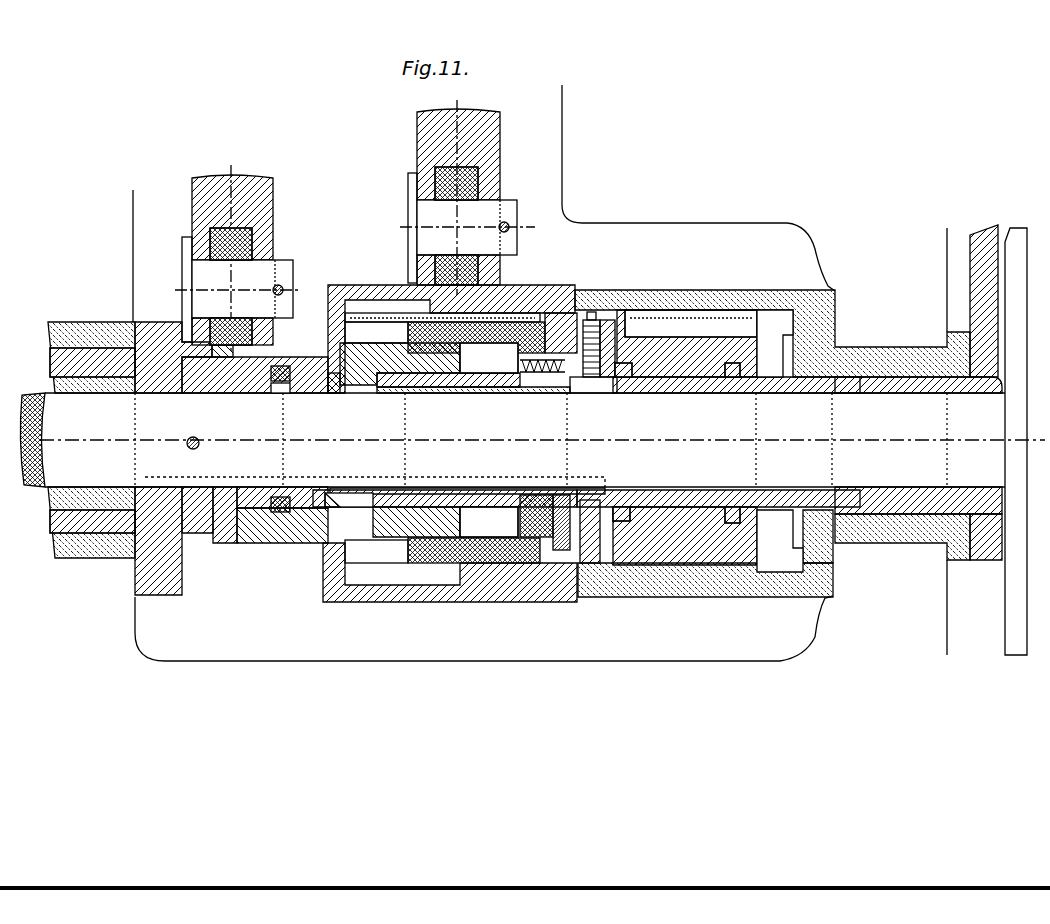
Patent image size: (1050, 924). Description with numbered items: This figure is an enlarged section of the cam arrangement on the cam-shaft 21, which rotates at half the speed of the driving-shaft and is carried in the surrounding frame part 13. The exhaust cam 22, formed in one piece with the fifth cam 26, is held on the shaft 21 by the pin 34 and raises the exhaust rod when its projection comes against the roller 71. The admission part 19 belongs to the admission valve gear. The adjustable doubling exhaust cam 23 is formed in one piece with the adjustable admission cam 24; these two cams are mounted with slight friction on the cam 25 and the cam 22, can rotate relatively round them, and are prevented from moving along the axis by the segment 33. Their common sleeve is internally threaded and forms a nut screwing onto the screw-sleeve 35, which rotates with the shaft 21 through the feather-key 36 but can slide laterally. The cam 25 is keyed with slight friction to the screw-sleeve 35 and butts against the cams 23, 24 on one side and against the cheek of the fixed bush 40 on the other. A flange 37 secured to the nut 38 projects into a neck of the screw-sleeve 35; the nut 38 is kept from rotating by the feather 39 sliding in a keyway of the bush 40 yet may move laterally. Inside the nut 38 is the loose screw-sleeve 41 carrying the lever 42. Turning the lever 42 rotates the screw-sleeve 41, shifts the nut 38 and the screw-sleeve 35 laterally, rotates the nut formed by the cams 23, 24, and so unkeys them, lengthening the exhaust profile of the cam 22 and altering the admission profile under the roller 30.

The housing 13 is at (91, 440).
The admission valve part 19 is at (237, 258).
The shaft 21 is at (42, 462).
The cam 22 is at (222, 537).
The cam 23 is at (275, 537).
The cam 24 is at (370, 598).
The cam 25 is at (520, 298).
The cam 26 is at (165, 567).
The roller 30 is at (465, 183).
The segment 33 is at (283, 366).
The pin 34 is at (190, 448).
The screw-sleeve 35 is at (472, 387).
The feather-key 36 is at (593, 490).
The flange 37 is at (573, 325).
The nut 38 is at (690, 539).
The feather 39 is at (665, 325).
The fixed bush 40 is at (728, 300).
The screw-sleeve 41 is at (733, 368).
The lever 42 is at (985, 287).
The roller 71 is at (247, 247).